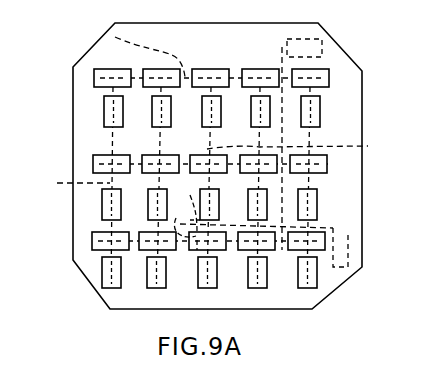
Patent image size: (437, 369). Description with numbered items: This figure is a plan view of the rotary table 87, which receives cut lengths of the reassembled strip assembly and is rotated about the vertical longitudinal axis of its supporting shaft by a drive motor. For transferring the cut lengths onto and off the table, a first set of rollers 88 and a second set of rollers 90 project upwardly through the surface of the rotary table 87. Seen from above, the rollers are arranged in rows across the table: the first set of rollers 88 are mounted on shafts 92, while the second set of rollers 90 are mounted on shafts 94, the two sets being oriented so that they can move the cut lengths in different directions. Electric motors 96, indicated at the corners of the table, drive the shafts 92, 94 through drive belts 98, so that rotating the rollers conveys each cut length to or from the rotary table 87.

The rotary table 87 is at (354, 90).
The first set of rollers 88 is at (152, 70).
The second set of rollers 90 is at (148, 208).
The shafts 92 is at (115, 37).
The shafts 94 is at (383, 140).
The electric motors 96 is at (323, 43).
The drive belts 98 is at (187, 251).